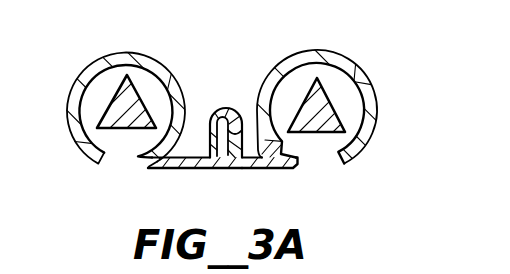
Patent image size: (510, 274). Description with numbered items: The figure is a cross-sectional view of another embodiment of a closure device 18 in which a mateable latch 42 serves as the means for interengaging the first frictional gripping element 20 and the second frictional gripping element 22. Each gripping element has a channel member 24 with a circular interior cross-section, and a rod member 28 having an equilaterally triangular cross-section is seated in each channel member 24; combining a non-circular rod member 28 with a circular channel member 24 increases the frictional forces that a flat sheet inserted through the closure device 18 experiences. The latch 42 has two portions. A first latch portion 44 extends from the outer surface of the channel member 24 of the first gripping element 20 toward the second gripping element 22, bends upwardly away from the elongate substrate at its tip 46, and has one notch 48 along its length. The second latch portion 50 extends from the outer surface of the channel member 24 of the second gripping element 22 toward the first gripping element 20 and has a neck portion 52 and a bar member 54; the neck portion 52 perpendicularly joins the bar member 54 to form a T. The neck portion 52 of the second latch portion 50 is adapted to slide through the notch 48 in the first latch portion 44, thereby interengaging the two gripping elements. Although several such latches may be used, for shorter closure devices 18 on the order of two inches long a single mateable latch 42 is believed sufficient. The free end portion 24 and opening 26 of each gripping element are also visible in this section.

The closure device 18 is at (222, 111).
The first frictional gripping element 20 is at (383, 81).
The second frictional gripping element 22 is at (72, 77).
The channel member 24 is at (78, 137).
The ring opening 26 is at (120, 163).
The rod member 28 is at (126, 76).
The mateable latch 42 is at (214, 176).
The first latch portion 44 is at (257, 155).
The tip 46 is at (227, 108).
The notch 48 is at (234, 166).
The second latch portion 50 is at (186, 155).
The neck portion 52 is at (258, 168).
The bar member 54 is at (216, 110).